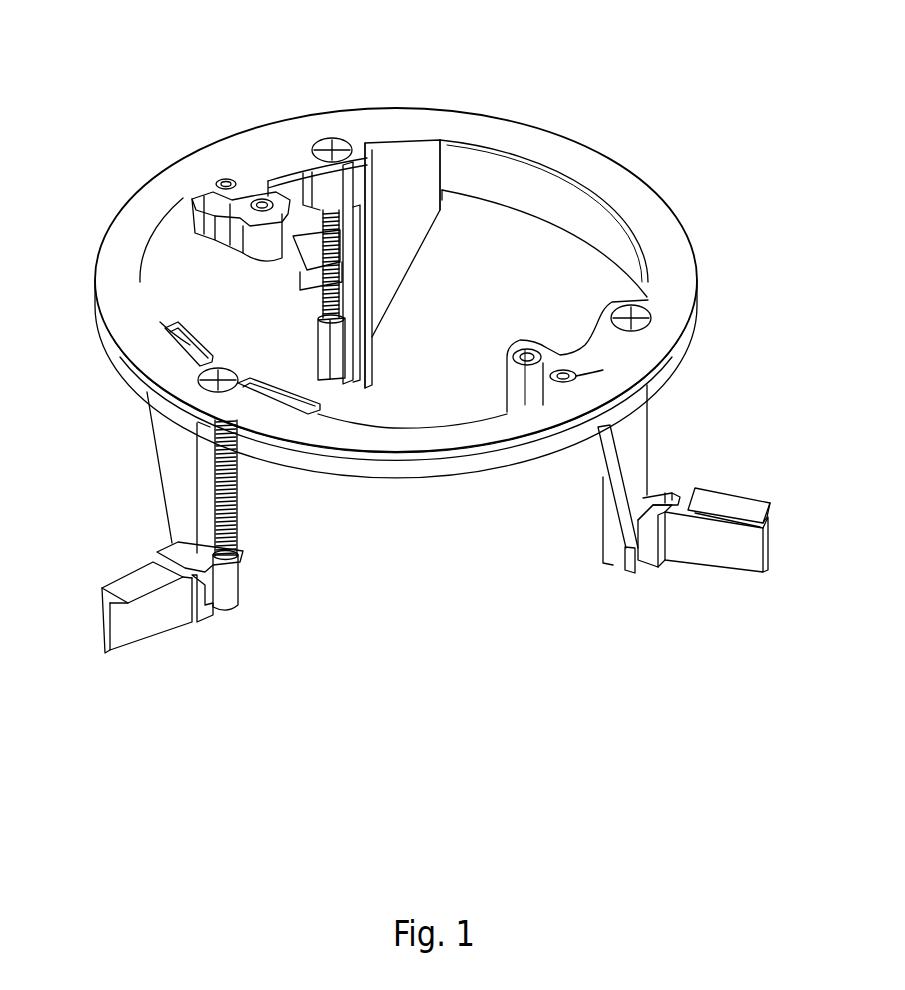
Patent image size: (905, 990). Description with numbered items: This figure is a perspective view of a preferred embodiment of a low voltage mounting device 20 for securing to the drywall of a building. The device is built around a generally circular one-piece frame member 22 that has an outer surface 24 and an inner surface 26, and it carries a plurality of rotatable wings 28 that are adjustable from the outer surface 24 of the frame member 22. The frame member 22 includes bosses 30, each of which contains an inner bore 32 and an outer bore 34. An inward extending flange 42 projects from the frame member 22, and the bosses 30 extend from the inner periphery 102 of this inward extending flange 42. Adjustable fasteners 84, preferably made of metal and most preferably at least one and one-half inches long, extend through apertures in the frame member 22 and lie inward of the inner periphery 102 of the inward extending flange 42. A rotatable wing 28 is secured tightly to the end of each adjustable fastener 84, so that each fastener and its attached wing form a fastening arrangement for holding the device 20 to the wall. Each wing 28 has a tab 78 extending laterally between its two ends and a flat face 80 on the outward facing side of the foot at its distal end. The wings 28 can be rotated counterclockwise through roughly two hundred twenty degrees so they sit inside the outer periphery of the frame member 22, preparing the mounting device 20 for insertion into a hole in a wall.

The low voltage mounting device 20 is at (170, 99).
The frame member 22 is at (600, 176).
The outer surface 24 is at (134, 291).
The inner surface 26 is at (383, 472).
The rotatable wing 28 is at (292, 266).
The boss 30 is at (507, 383).
The inner bore 32 is at (527, 352).
The outer bore 34 is at (662, 360).
The inward extending flange 42 is at (500, 184).
The tab 78 is at (170, 548).
The flat face 80 is at (722, 503).
The adjustable fastener 84 is at (334, 138).
The inner periphery 102 is at (393, 424).